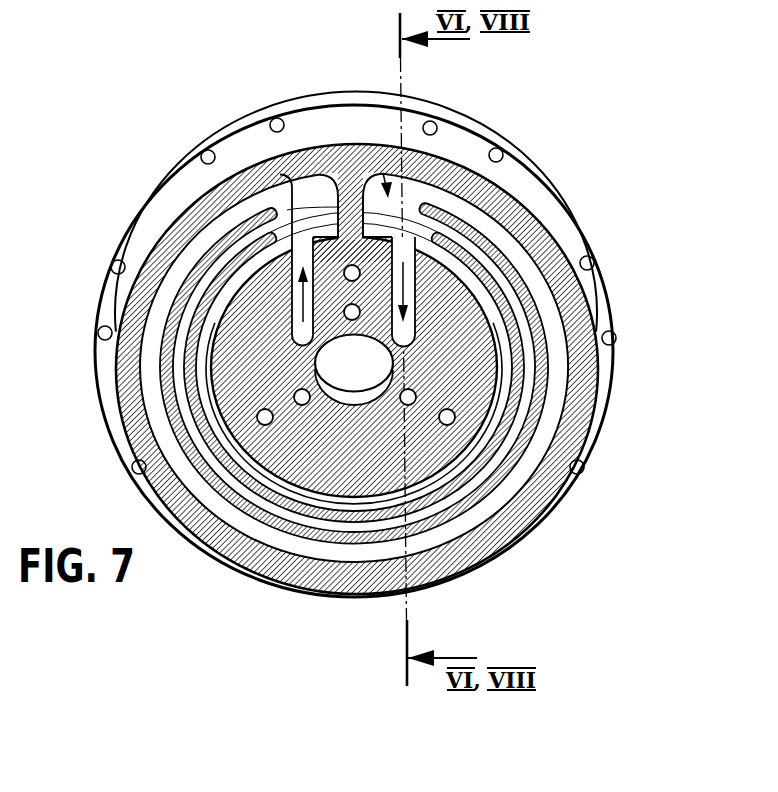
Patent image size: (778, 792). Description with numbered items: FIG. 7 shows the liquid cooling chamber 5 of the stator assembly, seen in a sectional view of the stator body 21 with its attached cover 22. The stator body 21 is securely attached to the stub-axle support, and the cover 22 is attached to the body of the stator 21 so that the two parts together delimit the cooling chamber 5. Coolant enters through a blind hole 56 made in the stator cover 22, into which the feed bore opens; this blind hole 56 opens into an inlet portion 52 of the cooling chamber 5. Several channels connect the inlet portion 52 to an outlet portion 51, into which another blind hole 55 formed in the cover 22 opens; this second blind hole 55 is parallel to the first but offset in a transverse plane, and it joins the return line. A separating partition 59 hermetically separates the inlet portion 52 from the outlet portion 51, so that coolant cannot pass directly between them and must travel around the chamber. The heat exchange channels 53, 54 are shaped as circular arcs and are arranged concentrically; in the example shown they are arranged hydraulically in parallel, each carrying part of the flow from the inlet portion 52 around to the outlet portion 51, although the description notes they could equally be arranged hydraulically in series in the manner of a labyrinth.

The cooling chamber 5 is at (385, 180).
The stator body 21 is at (128, 238).
The cover 22 is at (267, 317).
The outlet portion 51 is at (412, 190).
The inlet portion 52 is at (287, 190).
The heat exchange channel 53 is at (525, 257).
The heat exchange channel 54 is at (525, 328).
The blind hole 55 is at (445, 247).
The blind hole 56 is at (287, 257).
The separating partition 59 is at (350, 197).